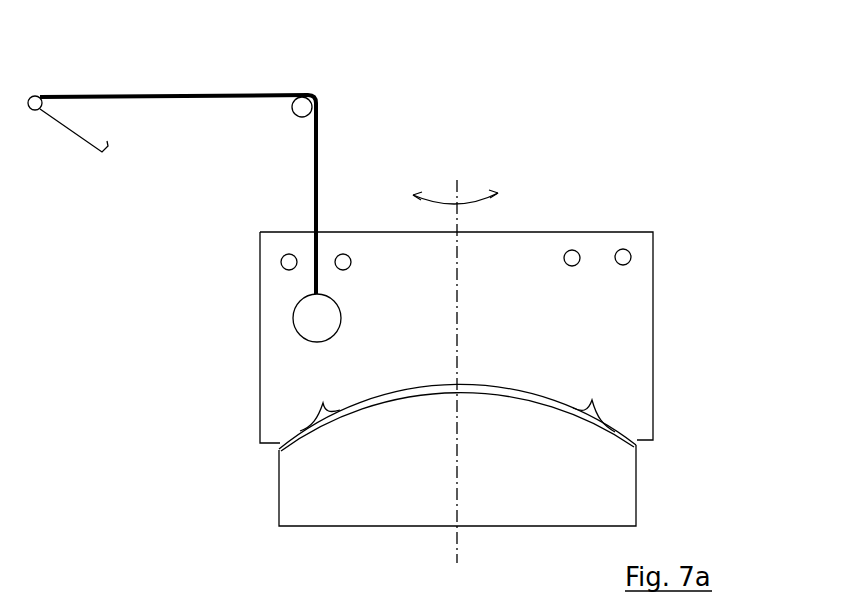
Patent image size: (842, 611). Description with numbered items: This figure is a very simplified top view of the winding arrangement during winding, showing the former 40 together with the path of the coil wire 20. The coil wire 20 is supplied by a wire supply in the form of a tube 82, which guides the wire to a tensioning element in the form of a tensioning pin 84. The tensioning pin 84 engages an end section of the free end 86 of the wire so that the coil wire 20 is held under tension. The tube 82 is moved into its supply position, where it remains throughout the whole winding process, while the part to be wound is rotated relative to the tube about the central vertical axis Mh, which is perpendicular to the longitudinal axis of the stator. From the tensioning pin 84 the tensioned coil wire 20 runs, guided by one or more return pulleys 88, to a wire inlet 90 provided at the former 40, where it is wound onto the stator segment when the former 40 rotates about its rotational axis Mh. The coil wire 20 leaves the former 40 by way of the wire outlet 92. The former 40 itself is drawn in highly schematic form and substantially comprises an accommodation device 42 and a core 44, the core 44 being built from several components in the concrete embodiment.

The coil wire 20 is at (320, 165).
The former 40 is at (703, 297).
The accommodation device 42 is at (493, 295).
The core 44 is at (607, 483).
The tube 82 is at (307, 318).
The tensioning pin 84 is at (38, 97).
The free end 86 is at (90, 150).
The return pulley 88 is at (317, 97).
The wire inlet 90 is at (340, 253).
The wire outlet 92 is at (580, 253).
The central vertical axis Mh is at (455, 533).